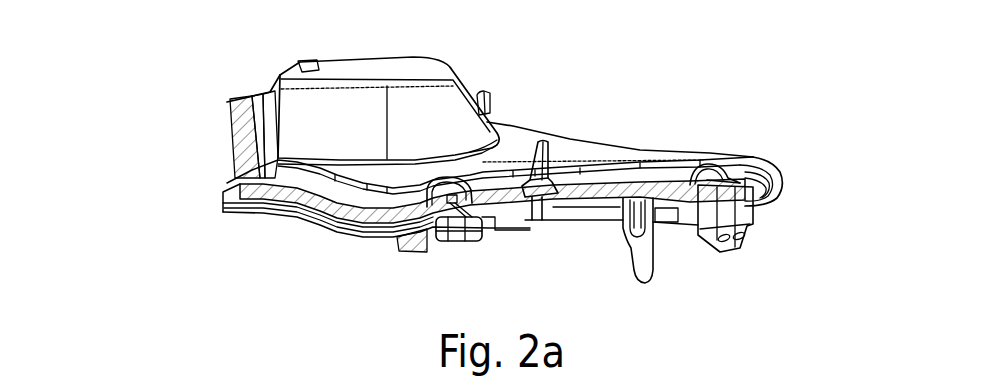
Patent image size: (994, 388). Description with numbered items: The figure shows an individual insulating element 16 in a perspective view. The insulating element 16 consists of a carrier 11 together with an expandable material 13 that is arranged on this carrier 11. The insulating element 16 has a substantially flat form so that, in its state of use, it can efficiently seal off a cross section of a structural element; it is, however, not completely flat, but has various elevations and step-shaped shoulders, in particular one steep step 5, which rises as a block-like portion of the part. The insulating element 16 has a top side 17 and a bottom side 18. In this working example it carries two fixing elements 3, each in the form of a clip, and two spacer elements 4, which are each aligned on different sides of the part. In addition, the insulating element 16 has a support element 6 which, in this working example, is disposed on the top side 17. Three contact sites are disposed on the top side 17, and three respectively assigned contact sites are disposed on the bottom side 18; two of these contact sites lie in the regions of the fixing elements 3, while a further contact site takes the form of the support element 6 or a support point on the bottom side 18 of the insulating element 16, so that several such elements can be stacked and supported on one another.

The fixing element 3 is at (444, 234).
The spacer element 4 is at (550, 142).
The steep step 5 is at (407, 98).
The support element 6 is at (481, 95).
The carrier 11 is at (513, 122).
The expandable material 13 is at (768, 170).
The insulating element 16 is at (633, 103).
The top side 17 is at (436, 152).
The bottom side 18 is at (333, 236).